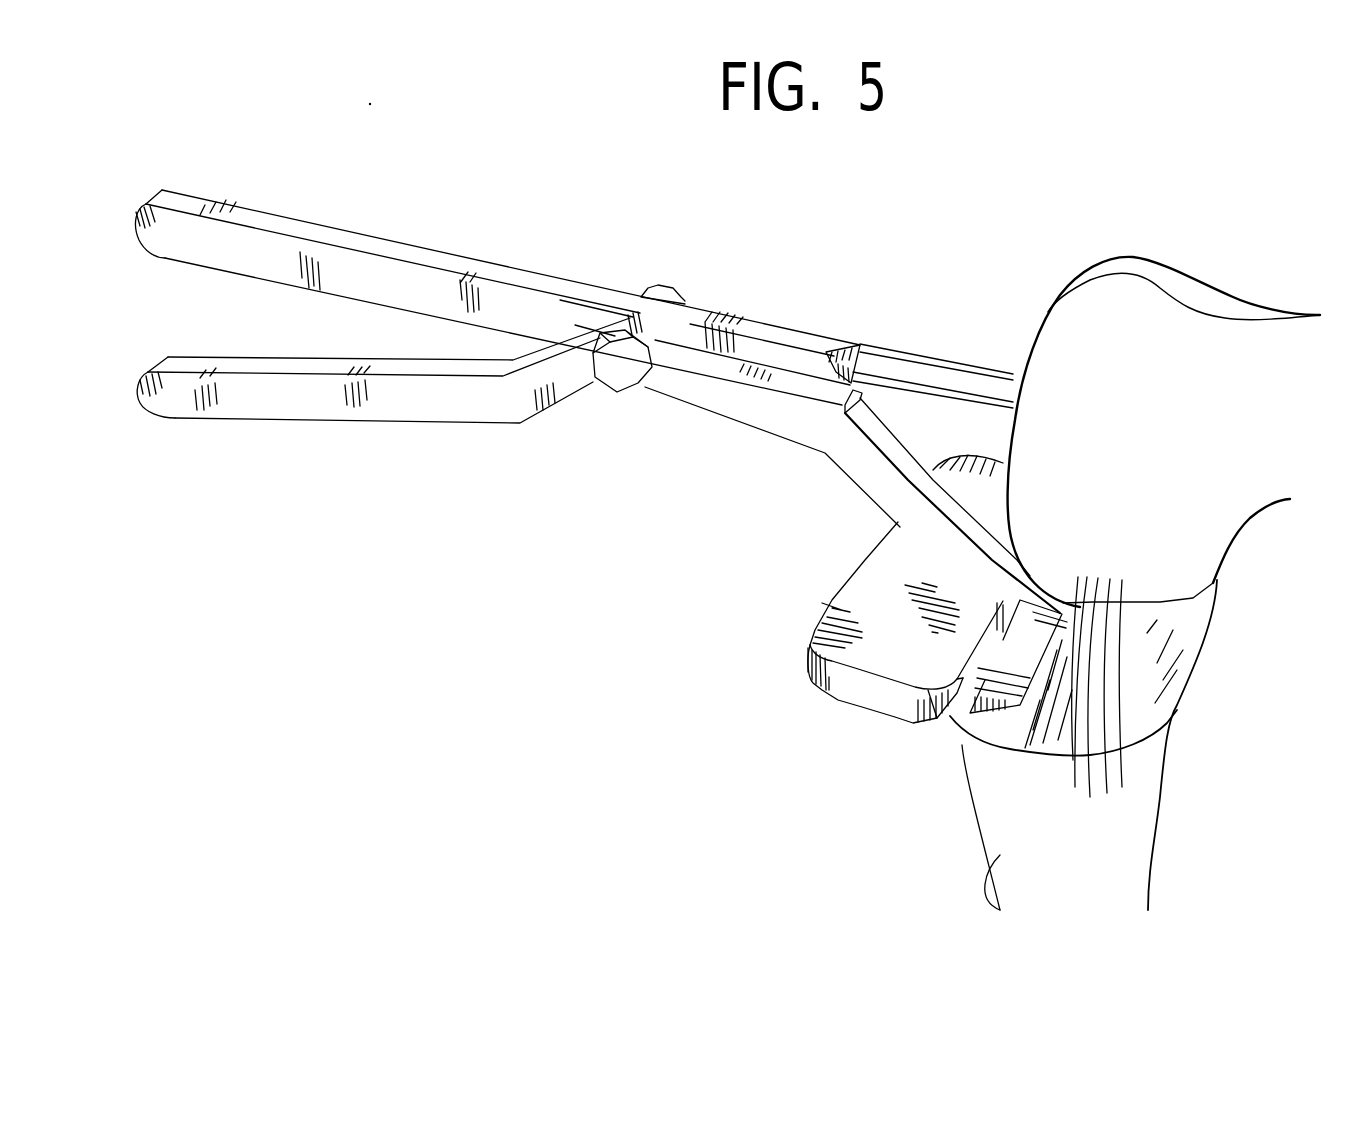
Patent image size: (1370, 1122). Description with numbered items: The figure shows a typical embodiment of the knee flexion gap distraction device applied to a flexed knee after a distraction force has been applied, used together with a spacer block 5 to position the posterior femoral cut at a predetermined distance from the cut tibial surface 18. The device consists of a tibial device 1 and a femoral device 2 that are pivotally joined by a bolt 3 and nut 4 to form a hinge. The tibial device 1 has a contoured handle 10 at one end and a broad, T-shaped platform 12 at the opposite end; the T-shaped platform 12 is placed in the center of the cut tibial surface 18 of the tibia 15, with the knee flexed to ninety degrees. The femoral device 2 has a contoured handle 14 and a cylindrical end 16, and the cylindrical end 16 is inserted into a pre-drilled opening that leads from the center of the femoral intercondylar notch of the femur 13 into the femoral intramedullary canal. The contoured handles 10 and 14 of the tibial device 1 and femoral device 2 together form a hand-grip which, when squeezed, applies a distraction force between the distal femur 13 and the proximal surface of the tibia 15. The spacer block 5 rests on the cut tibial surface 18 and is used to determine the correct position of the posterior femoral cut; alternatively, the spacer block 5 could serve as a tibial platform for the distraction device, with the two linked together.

The tibial device 1 is at (268, 440).
The femoral device 2 is at (268, 290).
The bolt 3 is at (640, 392).
The nut 4 is at (665, 294).
The spacer block 5 is at (848, 607).
The contoured handle 10 is at (390, 412).
The T-shaped platform 12 is at (982, 718).
The femur 13 is at (1160, 442).
The contoured handle 14 is at (410, 258).
The tibia 15 is at (1000, 855).
The cylindrical end 16 is at (948, 372).
The cut tibial surface 18 is at (1165, 665).